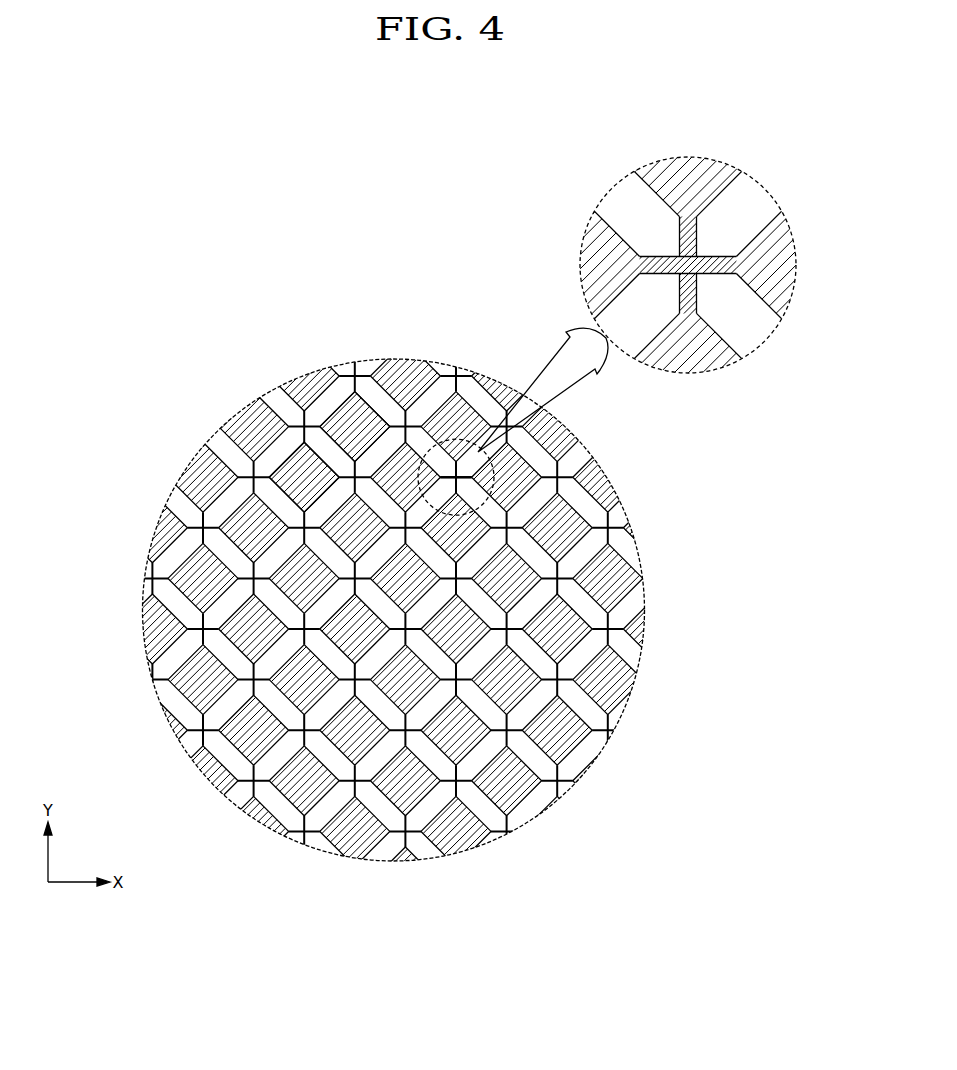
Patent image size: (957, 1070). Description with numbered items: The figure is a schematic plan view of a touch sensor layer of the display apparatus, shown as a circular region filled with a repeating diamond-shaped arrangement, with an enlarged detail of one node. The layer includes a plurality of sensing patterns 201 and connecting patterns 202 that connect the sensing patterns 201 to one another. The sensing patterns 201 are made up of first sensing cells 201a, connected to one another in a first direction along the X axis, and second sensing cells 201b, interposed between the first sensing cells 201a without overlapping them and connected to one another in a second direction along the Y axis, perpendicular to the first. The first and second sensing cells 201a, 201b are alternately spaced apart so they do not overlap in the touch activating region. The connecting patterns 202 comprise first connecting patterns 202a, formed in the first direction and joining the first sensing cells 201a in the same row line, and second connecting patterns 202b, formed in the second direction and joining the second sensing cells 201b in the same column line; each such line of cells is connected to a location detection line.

The sensing patterns 201 is at (268, 288).
The first sensing cells 201a is at (294, 463).
The second sensing cells 201b is at (363, 420).
The connecting patterns 202 is at (407, 288).
The first connecting patterns 202a is at (452, 477).
The second connecting patterns 202b is at (457, 470).